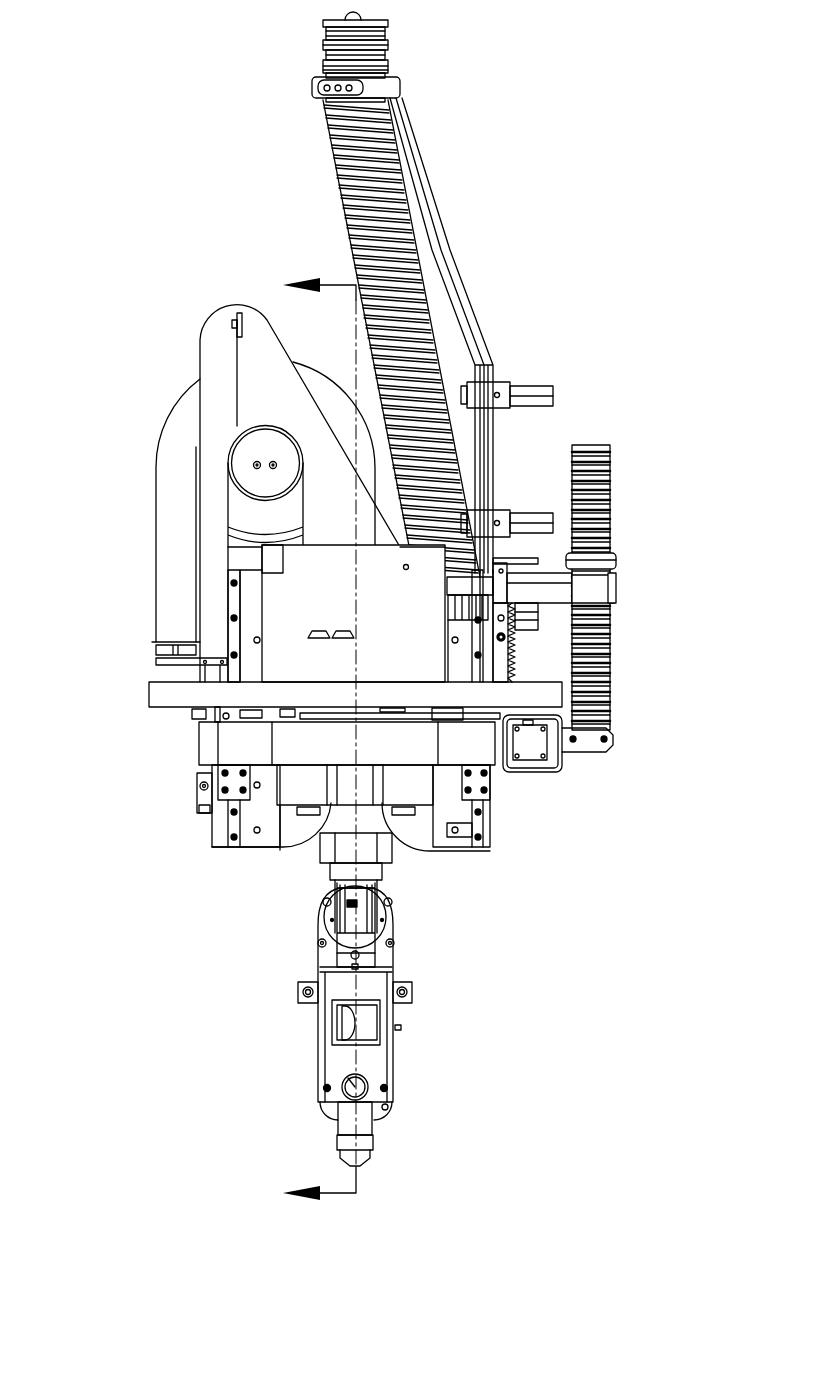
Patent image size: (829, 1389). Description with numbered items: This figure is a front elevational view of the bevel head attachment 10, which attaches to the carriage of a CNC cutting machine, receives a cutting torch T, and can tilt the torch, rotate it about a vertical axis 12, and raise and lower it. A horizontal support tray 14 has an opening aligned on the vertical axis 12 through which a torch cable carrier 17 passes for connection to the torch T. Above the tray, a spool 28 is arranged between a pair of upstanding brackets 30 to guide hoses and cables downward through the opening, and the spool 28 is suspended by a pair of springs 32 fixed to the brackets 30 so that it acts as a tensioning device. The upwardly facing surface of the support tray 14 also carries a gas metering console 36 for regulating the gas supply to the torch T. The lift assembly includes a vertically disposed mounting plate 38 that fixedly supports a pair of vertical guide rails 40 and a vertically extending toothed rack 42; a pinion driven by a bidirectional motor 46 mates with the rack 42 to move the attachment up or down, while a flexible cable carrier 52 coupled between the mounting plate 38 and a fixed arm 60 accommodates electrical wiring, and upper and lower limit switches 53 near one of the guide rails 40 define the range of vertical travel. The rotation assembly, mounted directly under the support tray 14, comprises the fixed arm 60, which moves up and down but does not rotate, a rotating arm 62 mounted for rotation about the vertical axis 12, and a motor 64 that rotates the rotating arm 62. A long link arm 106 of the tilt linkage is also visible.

The bevel head attachment 10 is at (583, 230).
The vertical axis 12 is at (357, 656).
The horizontal support tray 14 is at (150, 690).
The torch cable carrier 17 is at (158, 435).
The spool 28 is at (246, 520).
The upstanding brackets 30 is at (199, 338).
The springs 32 is at (232, 398).
The gas metering console 36 is at (300, 605).
The mounting plate 38 is at (258, 848).
The vertical guide rails 40 is at (230, 822).
The toothed rack 42 is at (512, 658).
The bidirectional motor 46 is at (537, 750).
The flexible cable carrier 52 is at (603, 470).
The limit switches 53 is at (200, 792).
The fixed arm 60 is at (199, 748).
The rotating arm 62 is at (440, 790).
The motor 64 is at (367, 907).
The long link arm 106 is at (395, 957).
The cutting torch T is at (340, 1148).